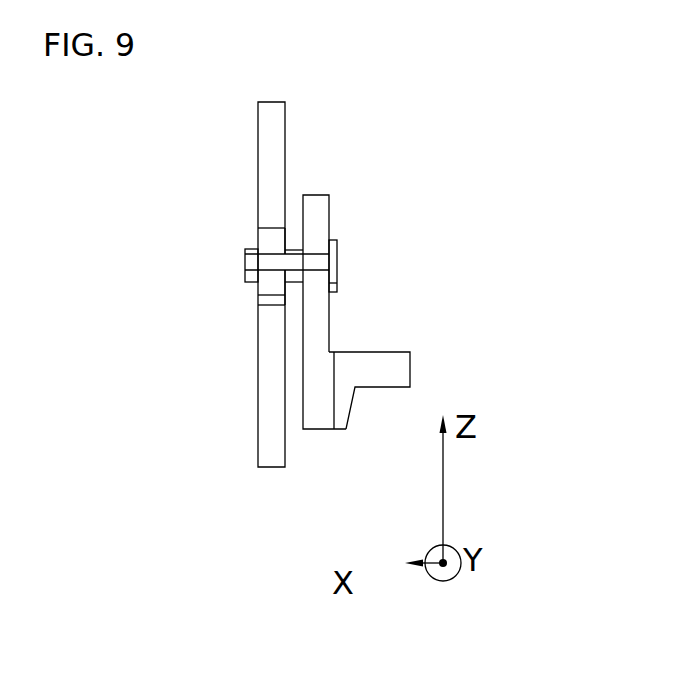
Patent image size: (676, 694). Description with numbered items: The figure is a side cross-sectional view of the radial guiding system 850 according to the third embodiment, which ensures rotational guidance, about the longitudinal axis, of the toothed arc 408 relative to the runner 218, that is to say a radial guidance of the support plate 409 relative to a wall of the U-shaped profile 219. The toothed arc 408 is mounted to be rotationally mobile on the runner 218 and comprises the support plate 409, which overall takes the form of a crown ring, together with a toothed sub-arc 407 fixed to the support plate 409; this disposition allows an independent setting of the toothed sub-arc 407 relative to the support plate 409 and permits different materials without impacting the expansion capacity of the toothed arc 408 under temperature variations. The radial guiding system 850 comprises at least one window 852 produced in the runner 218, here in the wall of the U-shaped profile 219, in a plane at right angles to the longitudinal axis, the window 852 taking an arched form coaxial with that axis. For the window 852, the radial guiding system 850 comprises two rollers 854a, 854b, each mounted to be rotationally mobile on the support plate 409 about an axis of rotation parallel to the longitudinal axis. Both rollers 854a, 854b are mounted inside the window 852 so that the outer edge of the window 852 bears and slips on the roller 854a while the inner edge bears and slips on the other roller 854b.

The runner 218 is at (210, 206).
The U-shaped profile 219 is at (270, 122).
The support plate 409 is at (317, 199).
The radial guiding system 850 is at (479, 169).
The toothed arc 408 is at (447, 302).
The toothed sub-arc 407 is at (395, 355).
The window 852 is at (260, 298).
The roller 854a is at (268, 244).
The roller 854b is at (258, 294).